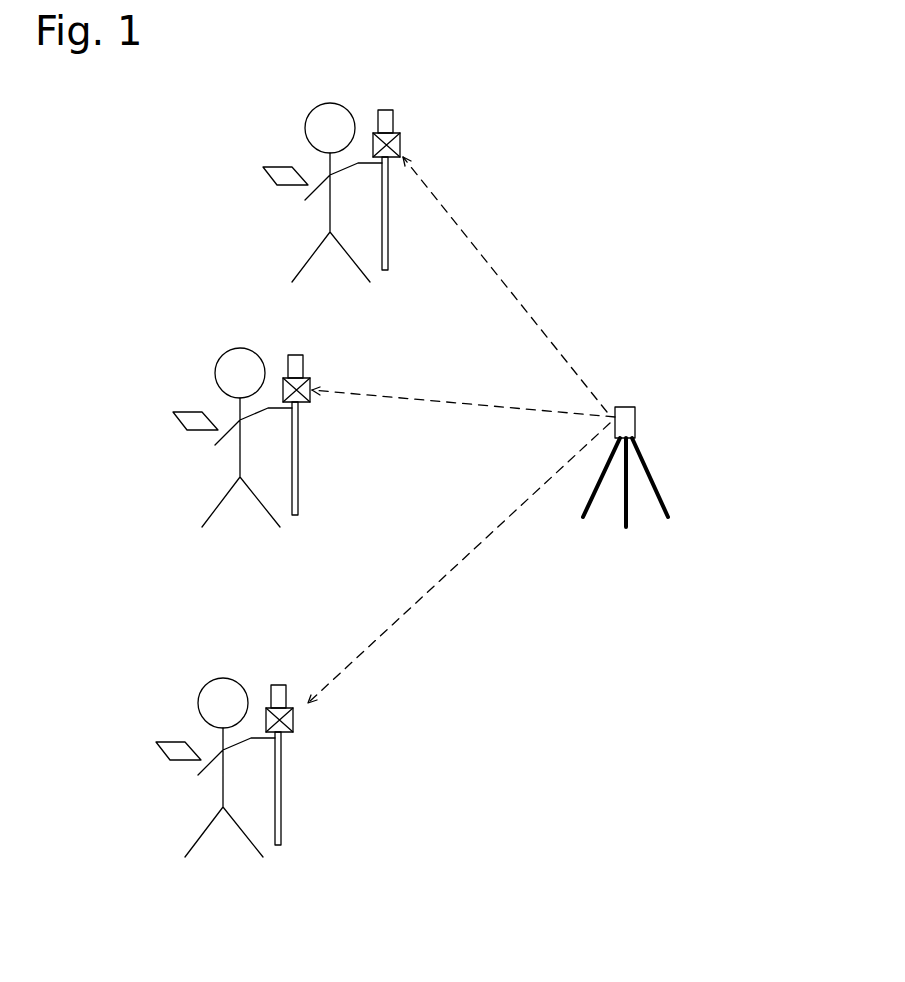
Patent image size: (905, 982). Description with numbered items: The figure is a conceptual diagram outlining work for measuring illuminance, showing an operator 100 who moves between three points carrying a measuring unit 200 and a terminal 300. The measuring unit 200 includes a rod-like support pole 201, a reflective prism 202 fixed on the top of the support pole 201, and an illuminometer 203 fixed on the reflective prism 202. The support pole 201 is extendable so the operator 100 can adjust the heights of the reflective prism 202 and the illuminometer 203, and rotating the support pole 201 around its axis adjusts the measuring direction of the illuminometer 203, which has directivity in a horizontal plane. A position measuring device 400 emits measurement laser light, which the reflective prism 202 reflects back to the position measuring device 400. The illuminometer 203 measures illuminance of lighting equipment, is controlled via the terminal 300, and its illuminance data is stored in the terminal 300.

The operator 100 is at (200, 475).
The measuring unit 200 is at (352, 421).
The support pole 201 is at (300, 440).
The reflective prism 202 is at (310, 382).
The illuminometer 203 is at (303, 375).
The terminal 300 is at (177, 399).
The position measuring device 400 is at (653, 416).